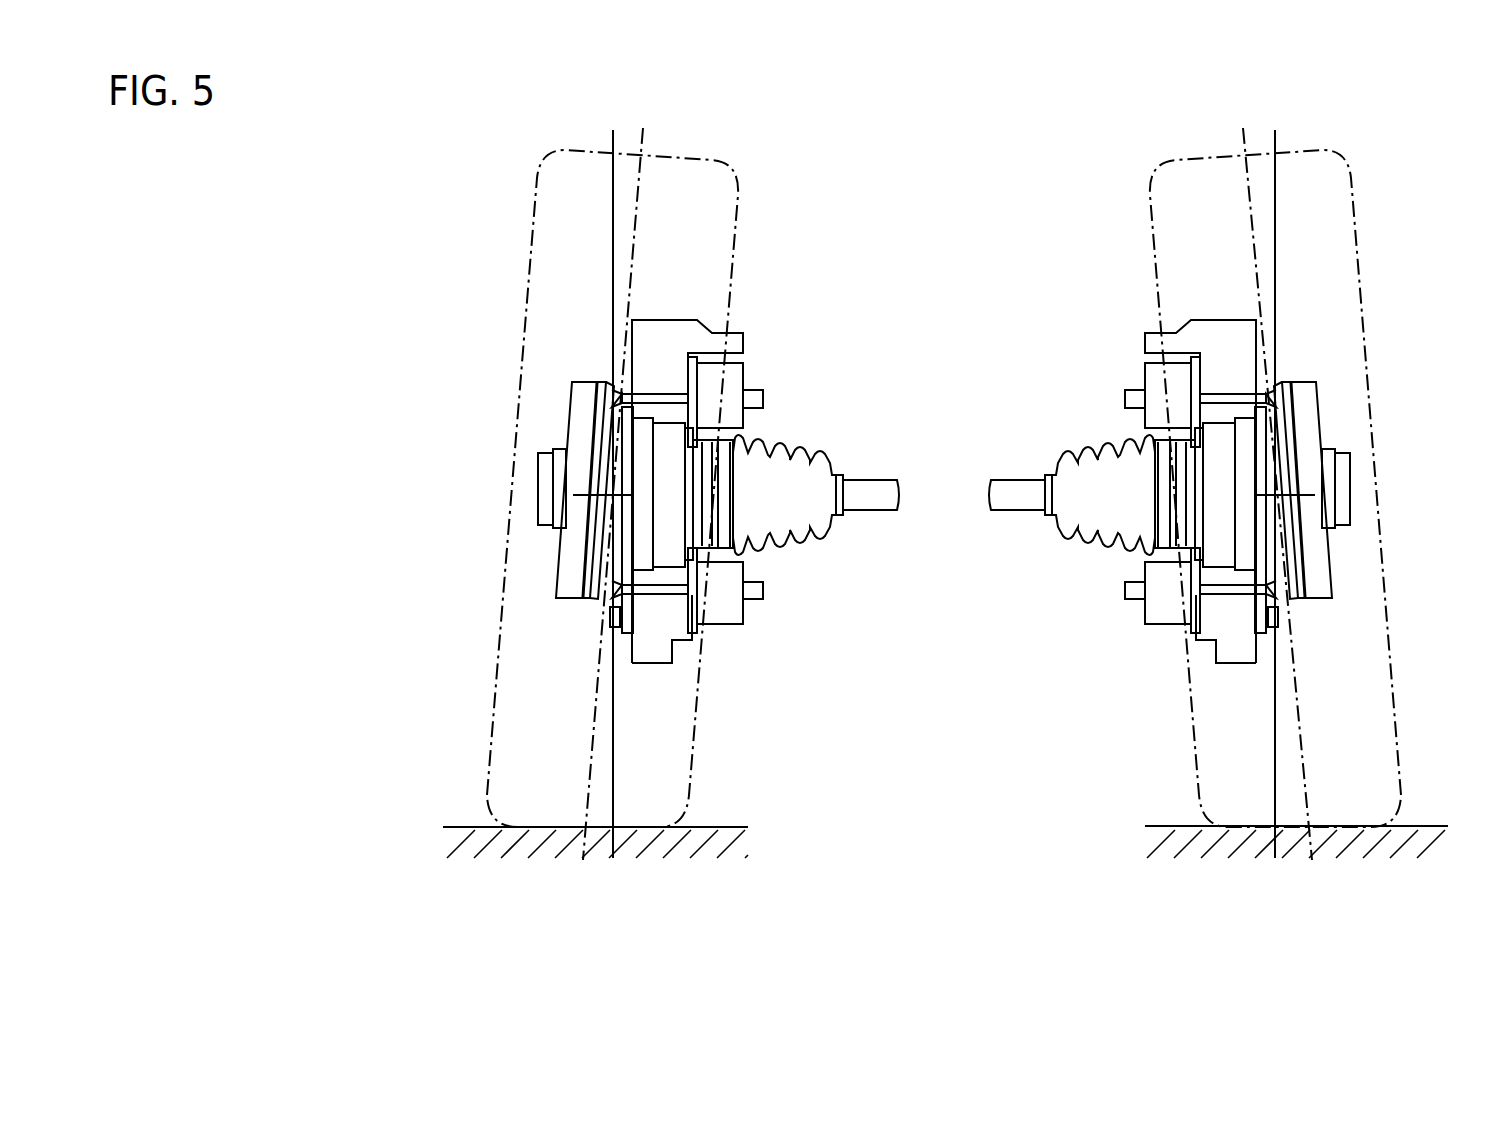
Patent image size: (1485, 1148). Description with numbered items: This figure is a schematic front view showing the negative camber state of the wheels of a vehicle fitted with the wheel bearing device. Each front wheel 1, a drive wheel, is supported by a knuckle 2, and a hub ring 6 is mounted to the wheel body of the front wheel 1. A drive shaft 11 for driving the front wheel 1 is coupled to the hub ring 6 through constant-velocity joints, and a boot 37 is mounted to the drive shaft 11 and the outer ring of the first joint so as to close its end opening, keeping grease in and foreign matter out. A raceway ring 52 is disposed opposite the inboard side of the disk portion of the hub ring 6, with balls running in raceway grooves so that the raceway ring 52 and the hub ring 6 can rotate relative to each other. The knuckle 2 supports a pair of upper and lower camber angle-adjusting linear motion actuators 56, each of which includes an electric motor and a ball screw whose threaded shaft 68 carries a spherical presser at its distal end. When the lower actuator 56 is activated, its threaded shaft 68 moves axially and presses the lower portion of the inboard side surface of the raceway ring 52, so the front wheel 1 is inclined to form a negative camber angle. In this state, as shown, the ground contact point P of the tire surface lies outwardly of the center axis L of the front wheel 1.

The front wheel 1 is at (537, 163).
The knuckle 2 is at (697, 320).
The hub ring 6 is at (573, 413).
The drive shaft 11 is at (990, 500).
The boot 37 is at (795, 450).
The raceway ring 52 is at (583, 562).
The camber angle-adjusting linear motion actuators 56 is at (750, 372).
The threaded shaft 68 is at (648, 400).
The center axis of the front wheel L is at (618, 735).
The ground contact point P is at (586, 827).